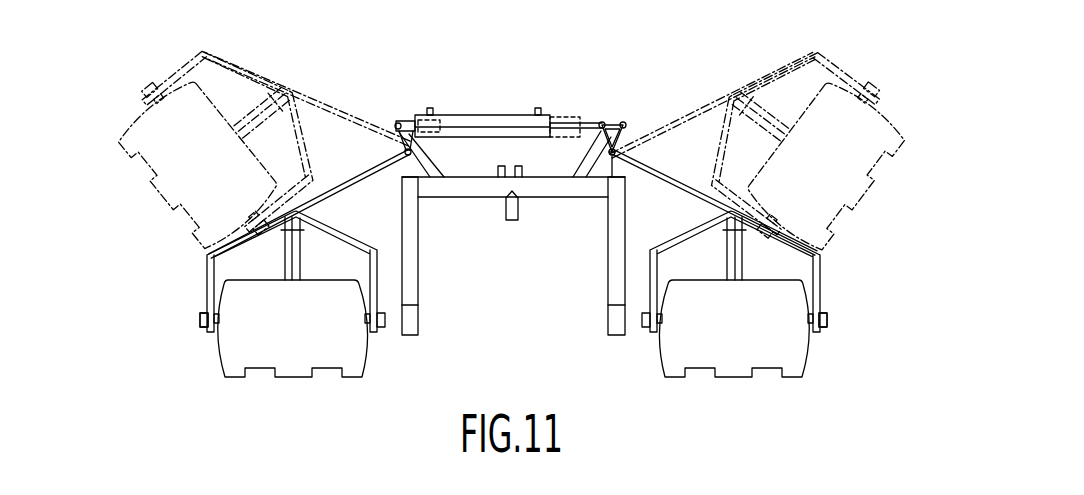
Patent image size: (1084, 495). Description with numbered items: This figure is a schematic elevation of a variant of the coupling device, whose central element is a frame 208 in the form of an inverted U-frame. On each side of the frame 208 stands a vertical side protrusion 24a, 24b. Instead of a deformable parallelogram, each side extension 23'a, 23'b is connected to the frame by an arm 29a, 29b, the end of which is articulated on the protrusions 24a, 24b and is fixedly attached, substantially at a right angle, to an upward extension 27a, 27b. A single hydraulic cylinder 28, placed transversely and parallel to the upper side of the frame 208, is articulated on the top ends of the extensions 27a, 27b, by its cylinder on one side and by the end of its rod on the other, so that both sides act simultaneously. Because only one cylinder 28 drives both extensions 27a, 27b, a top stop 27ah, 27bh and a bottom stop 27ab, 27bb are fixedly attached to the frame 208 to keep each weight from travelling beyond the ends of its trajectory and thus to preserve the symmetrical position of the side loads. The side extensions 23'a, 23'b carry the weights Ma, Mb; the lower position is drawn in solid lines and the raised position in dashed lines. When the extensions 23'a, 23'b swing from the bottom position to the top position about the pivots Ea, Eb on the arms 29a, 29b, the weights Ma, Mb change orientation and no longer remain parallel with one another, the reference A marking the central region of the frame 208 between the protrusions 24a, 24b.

The hydraulic cylinder 28 is at (491, 112).
The upward extension 27a is at (395, 133).
The upward extension 27b is at (626, 122).
The top stop 27ah is at (432, 168).
The top stop 27bh is at (590, 158).
The bottom stop 27ab is at (398, 150).
The bottom stop 27bb is at (626, 158).
The arm 29a is at (348, 182).
The arm 29b is at (676, 183).
The vertical side protrusion 24a is at (423, 195).
The vertical side protrusion 24b is at (597, 195).
The frame 208 is at (555, 200).
The axis A is at (478, 200).
The side extension 23'a is at (249, 175).
The side extension 23'b is at (781, 176).
The left pivot axis Ea is at (190, 322).
The right pivot axis Eb is at (840, 313).
The weight Ma is at (240, 350).
The weight Mb is at (790, 348).